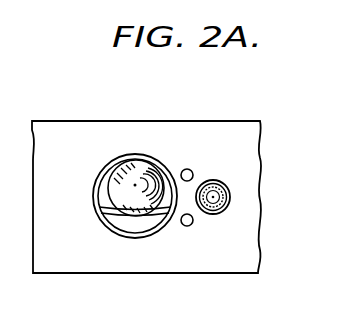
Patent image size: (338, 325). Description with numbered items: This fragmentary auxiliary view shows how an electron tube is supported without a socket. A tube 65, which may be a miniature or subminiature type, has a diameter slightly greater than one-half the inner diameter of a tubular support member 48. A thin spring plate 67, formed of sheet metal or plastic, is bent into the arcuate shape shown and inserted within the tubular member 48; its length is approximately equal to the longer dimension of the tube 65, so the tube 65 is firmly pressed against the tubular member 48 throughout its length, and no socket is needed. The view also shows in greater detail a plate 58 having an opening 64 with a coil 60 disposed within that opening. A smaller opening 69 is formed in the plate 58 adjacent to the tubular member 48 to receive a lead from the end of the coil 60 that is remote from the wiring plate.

The plate 58 is at (261, 121).
The tubular support member 48 is at (126, 238).
The spring plate 67 is at (117, 215).
The tube 65 is at (133, 167).
The coil 60 is at (229, 191).
The opening 64 is at (229, 204).
The smaller opening 69 is at (190, 226).